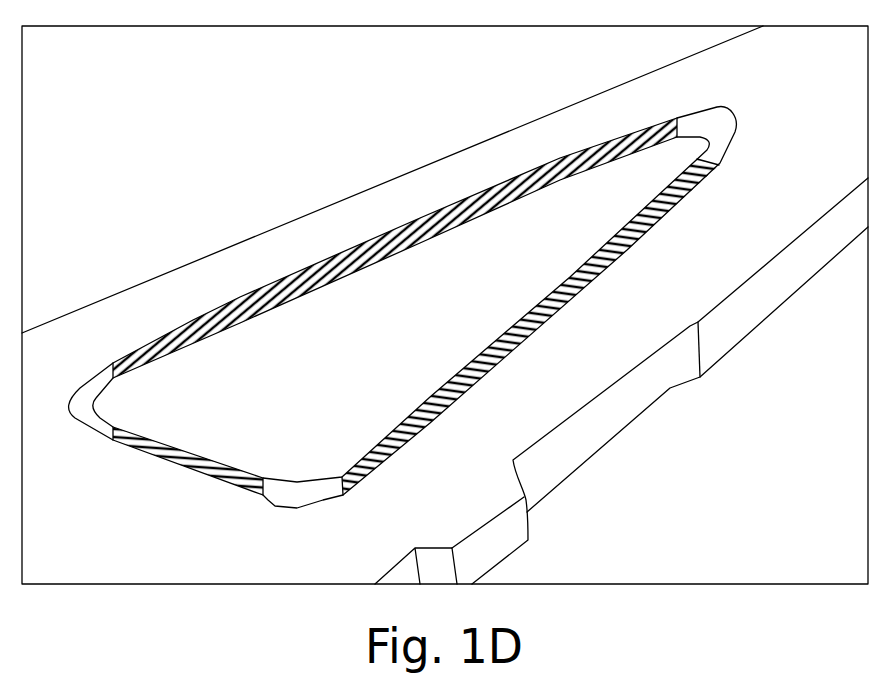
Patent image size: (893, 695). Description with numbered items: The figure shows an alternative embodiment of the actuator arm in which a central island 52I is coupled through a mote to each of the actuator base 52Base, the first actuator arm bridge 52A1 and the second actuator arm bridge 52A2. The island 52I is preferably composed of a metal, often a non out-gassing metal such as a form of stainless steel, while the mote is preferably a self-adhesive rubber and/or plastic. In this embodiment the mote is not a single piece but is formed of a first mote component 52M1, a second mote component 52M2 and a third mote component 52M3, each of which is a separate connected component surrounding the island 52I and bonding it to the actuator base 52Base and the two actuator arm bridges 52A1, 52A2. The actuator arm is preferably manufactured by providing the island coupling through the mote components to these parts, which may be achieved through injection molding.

The first actuator arm bridge 52A1 is at (355, 194).
The second actuator arm bridge 52A2 is at (618, 427).
The actuator base 52Base is at (403, 331).
The island 52I is at (401, 309).
The first mote component 52M1 is at (632, 130).
The second mote component 52M2 is at (637, 243).
The third mote component 52M3 is at (213, 480).